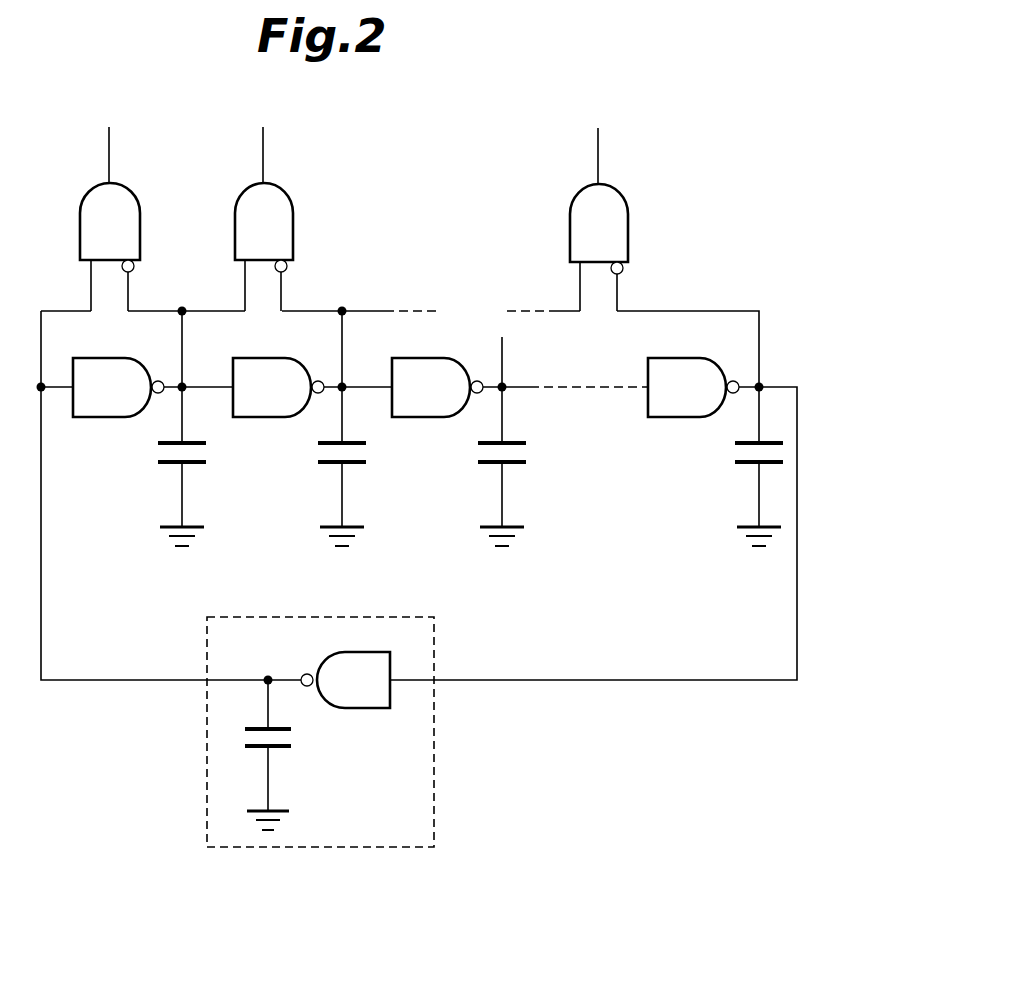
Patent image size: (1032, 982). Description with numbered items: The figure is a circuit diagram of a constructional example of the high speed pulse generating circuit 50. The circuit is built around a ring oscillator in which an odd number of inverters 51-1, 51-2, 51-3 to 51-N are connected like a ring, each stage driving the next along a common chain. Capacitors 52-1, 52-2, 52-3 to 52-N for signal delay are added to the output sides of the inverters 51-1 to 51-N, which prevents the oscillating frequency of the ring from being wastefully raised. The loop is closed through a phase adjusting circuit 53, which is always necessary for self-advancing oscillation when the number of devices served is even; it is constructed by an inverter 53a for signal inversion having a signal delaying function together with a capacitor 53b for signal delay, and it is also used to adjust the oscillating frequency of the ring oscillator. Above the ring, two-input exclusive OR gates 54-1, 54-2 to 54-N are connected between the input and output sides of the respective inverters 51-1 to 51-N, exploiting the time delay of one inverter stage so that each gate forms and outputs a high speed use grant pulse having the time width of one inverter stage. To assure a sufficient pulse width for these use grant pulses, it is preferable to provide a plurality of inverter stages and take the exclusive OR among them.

The high speed pulse generating circuit 50 is at (824, 210).
The inverter 51-1 is at (98, 358).
The inverter 51-2 is at (265, 358).
The inverter 51-3 is at (424, 358).
The inverter 51-N is at (680, 358).
The capacitor 52-1 is at (200, 452).
The capacitor 52-2 is at (362, 452).
The capacitor 52-3 is at (520, 452).
The capacitor 52-N is at (737, 455).
The phase adjusting circuit 53 is at (434, 713).
The inverter 53a is at (355, 708).
The capacitor 53b is at (290, 737).
The 2-input exclusive OR gate 54-1 is at (140, 231).
The 2-input exclusive OR gate 54-2 is at (293, 247).
The 2-input exclusive OR gate 54-N is at (628, 230).